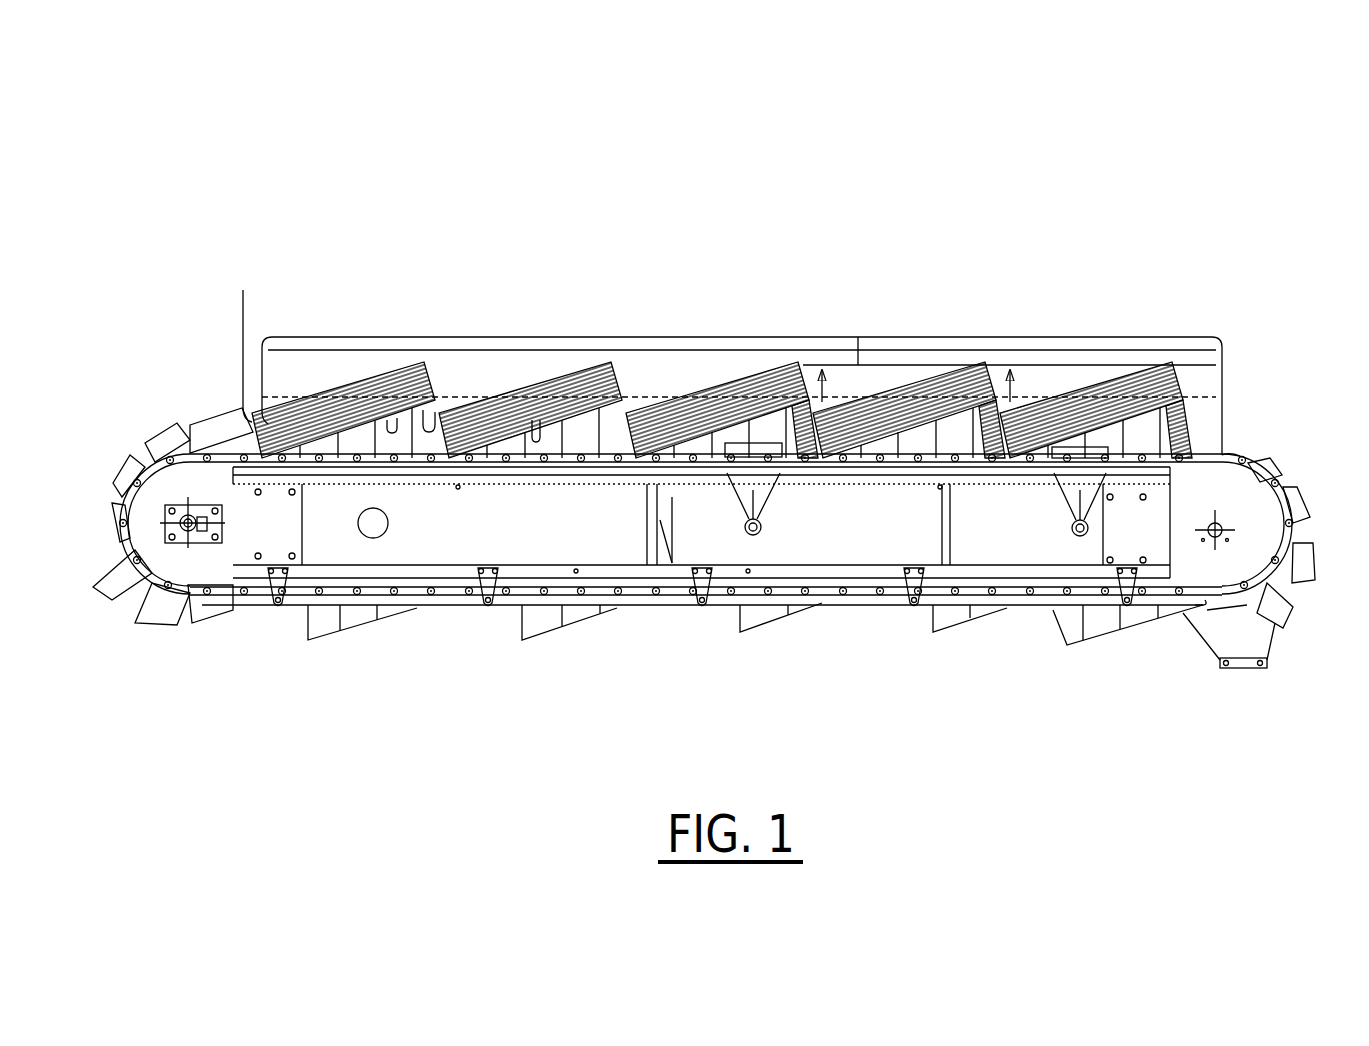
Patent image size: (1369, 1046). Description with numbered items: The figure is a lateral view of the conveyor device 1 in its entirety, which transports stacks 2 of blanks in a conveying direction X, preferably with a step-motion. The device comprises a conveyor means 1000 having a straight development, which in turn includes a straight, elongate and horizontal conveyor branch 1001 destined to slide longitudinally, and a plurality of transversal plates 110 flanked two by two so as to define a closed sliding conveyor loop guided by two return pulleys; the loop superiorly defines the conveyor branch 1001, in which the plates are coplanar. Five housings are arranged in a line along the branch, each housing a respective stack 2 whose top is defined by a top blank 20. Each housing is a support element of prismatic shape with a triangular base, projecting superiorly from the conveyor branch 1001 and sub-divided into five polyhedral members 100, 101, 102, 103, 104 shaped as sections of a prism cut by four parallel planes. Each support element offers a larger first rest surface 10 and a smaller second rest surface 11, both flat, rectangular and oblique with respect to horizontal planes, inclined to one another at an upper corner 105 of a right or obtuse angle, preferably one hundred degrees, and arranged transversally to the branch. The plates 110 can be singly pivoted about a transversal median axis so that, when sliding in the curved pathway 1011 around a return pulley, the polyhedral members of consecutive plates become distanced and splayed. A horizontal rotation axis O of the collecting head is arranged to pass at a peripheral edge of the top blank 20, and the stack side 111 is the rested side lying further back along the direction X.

The conveyor device 1 is at (823, 208).
The stack 2 is at (330, 366).
The first rest surface 10 is at (390, 420).
The second rest surface 11 is at (426, 410).
The top blank 20 is at (858, 365).
The polyhedral member 100 is at (800, 440).
The polyhedral member 101 is at (768, 430).
The polyhedral member 102 is at (735, 440).
The polyhedral member 103 is at (660, 465).
The polyhedral member 104 is at (672, 563).
The upper corner 105 is at (625, 430).
The transversal plate 110 is at (182, 447).
The end plate 111 is at (212, 447).
The conveyor means 1000 is at (106, 400).
The conveyor branch 1001 is at (456, 478).
The curved pathway 1011 is at (156, 658).
The horizontal rotation axis O is at (985, 405).
The conveying direction X is at (702, 313).